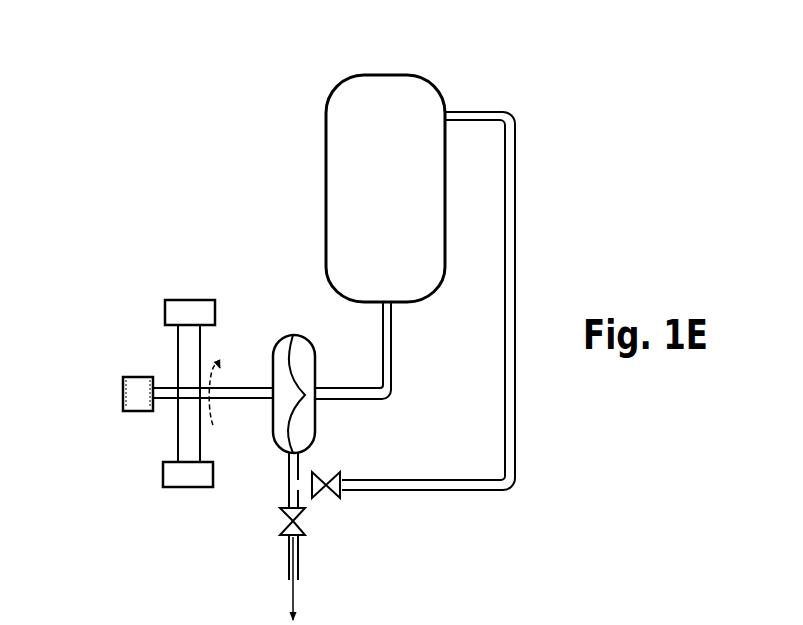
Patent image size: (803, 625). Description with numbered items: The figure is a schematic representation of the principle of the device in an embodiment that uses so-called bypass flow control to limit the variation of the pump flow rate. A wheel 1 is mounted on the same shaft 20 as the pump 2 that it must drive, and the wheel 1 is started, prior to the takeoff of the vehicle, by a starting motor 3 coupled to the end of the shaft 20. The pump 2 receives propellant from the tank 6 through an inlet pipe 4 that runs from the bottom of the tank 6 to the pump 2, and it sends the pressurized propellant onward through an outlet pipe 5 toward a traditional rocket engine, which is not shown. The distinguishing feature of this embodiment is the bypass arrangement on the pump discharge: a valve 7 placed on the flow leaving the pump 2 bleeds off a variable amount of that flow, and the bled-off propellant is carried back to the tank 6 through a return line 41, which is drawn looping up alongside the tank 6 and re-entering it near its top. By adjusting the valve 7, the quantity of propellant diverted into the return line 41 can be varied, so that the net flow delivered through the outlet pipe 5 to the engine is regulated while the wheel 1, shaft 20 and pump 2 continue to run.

The wheel 1 is at (170, 353).
The pump 2 is at (277, 337).
The starting motor 3 is at (119, 403).
The inlet pipe 4 is at (399, 394).
The outlet pipe 5 is at (301, 557).
The tank 6 is at (440, 89).
The valve 7 is at (312, 516).
The shaft 20 is at (254, 406).
The return line 41 is at (518, 315).